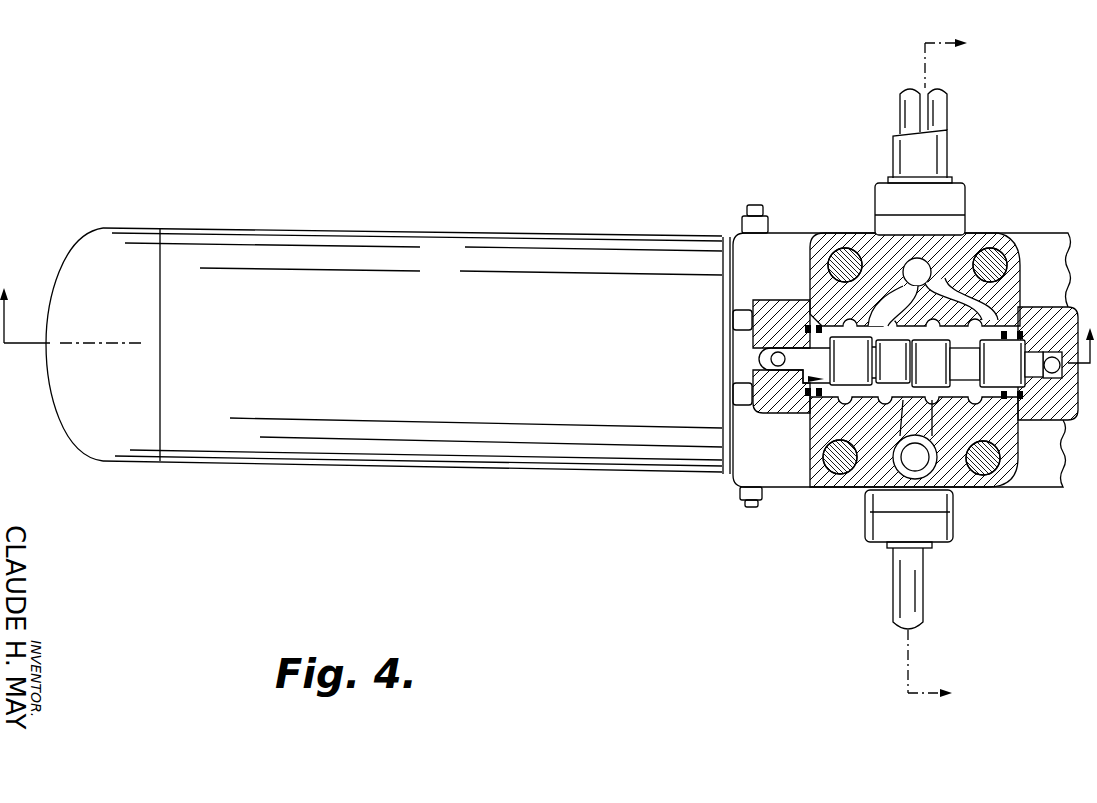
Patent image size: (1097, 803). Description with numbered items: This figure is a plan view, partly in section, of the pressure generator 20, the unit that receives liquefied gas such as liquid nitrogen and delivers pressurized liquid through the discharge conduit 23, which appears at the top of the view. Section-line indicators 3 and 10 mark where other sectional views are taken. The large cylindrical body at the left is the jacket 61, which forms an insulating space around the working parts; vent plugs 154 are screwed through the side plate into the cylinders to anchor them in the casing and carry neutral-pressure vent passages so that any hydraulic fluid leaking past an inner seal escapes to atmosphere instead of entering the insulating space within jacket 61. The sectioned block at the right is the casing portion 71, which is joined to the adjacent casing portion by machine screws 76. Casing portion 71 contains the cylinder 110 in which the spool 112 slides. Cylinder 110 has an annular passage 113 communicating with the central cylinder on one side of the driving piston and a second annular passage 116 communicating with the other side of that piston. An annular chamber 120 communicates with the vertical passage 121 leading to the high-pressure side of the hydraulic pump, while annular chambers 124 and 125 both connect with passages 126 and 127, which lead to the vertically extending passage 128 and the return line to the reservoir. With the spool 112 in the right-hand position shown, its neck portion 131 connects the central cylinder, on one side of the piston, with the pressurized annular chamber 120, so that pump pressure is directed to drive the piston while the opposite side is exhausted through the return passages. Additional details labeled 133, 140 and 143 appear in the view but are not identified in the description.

The section line 3- 3 is at (547, 341).
The section line 10- 10 is at (923, 368).
The pressure generator 20 is at (782, 224).
The discharge conduit 23 is at (903, 98).
The jacket 61 is at (358, 247).
The casing portion 71 is at (982, 243).
The machine screws 76 is at (818, 489).
The cylinder 110 is at (788, 347).
The spool 112 is at (762, 415).
The annular passage 113 is at (850, 483).
The second annular passage 116 is at (962, 484).
The annular chamber 120 is at (822, 300).
The vertical passage 121 is at (967, 489).
The annular chamber 124 is at (820, 441).
The annular chamber 125 is at (1026, 432).
The passage 126 is at (822, 322).
The passage 127 is at (1032, 286).
The vertically extending passage 128 is at (976, 232).
The neck portion 131 is at (858, 490).
The port 133 is at (1006, 262).
The valve spool 140 is at (770, 358).
The outlet block 143 is at (1056, 350).
The vent plugs 154 is at (738, 225).